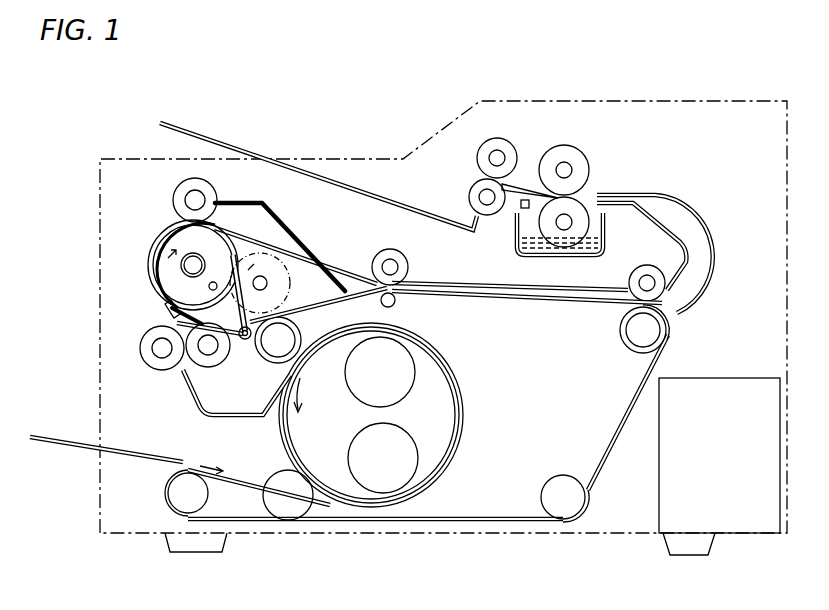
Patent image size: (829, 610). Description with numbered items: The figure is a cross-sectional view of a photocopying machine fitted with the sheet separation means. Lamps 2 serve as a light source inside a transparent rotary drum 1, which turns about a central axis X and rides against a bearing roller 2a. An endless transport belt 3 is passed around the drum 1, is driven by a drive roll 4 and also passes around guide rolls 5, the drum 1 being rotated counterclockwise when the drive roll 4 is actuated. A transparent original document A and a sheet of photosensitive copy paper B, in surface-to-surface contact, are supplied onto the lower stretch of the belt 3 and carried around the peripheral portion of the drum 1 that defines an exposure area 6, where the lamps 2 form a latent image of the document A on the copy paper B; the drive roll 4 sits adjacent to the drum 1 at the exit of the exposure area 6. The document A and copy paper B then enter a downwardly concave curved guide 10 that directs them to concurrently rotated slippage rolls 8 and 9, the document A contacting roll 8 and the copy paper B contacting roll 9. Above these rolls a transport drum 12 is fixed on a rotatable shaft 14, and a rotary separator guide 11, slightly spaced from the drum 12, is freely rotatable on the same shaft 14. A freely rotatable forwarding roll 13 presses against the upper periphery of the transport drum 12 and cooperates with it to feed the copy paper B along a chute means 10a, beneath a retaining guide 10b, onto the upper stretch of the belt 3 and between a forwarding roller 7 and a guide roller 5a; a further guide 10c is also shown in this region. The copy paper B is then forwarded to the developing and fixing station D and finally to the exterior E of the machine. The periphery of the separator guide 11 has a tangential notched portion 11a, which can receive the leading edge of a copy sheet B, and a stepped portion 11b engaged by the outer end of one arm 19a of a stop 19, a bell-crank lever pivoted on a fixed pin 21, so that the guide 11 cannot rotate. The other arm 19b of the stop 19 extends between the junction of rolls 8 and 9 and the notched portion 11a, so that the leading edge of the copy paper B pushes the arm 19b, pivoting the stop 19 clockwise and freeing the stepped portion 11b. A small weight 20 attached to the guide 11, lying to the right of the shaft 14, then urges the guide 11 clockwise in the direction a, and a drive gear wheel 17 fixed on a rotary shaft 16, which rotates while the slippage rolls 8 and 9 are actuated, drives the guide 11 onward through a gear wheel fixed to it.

The transparent rotary drum 1 is at (463, 378).
The lamps 2 is at (402, 440).
The bearing roller 2a is at (318, 500).
The endless transport belt 3 is at (480, 294).
The drive roll 4 is at (318, 305).
The guide rolls 5 is at (394, 305).
The guide roller 5a is at (648, 282).
The exposure area 6 is at (465, 412).
The forwarding roller 7 is at (402, 262).
The slippage roll 8 is at (150, 365).
The slippage roll 9 is at (210, 365).
The curved guide 10 is at (235, 420).
The chute means 10a is at (325, 195).
The retaining guide 10b is at (288, 246).
The guide 10c is at (668, 194).
The rotary separator guide 11 is at (150, 262).
The notched portion 11a is at (165, 316).
The stepped portion 11b is at (220, 253).
The transport drum 12 is at (170, 225).
The forwarding roll 13 is at (196, 178).
The rotatable shaft 14 is at (165, 240).
The rotary shaft 16 is at (288, 248).
The drive gear wheel 17 is at (348, 290).
The stop 19 is at (286, 286).
The arm of stop 19a is at (234, 254).
The arm of stop 19b is at (177, 326).
The small weight 20 is at (209, 287).
The fixed pin 21 is at (245, 342).
The original document A is at (142, 454).
The copy paper B is at (154, 458).
The developing and fixing station D is at (528, 162).
The exterior of the photocopying machine E is at (367, 194).
The central axis X is at (373, 412).
The rotation direction a is at (165, 266).